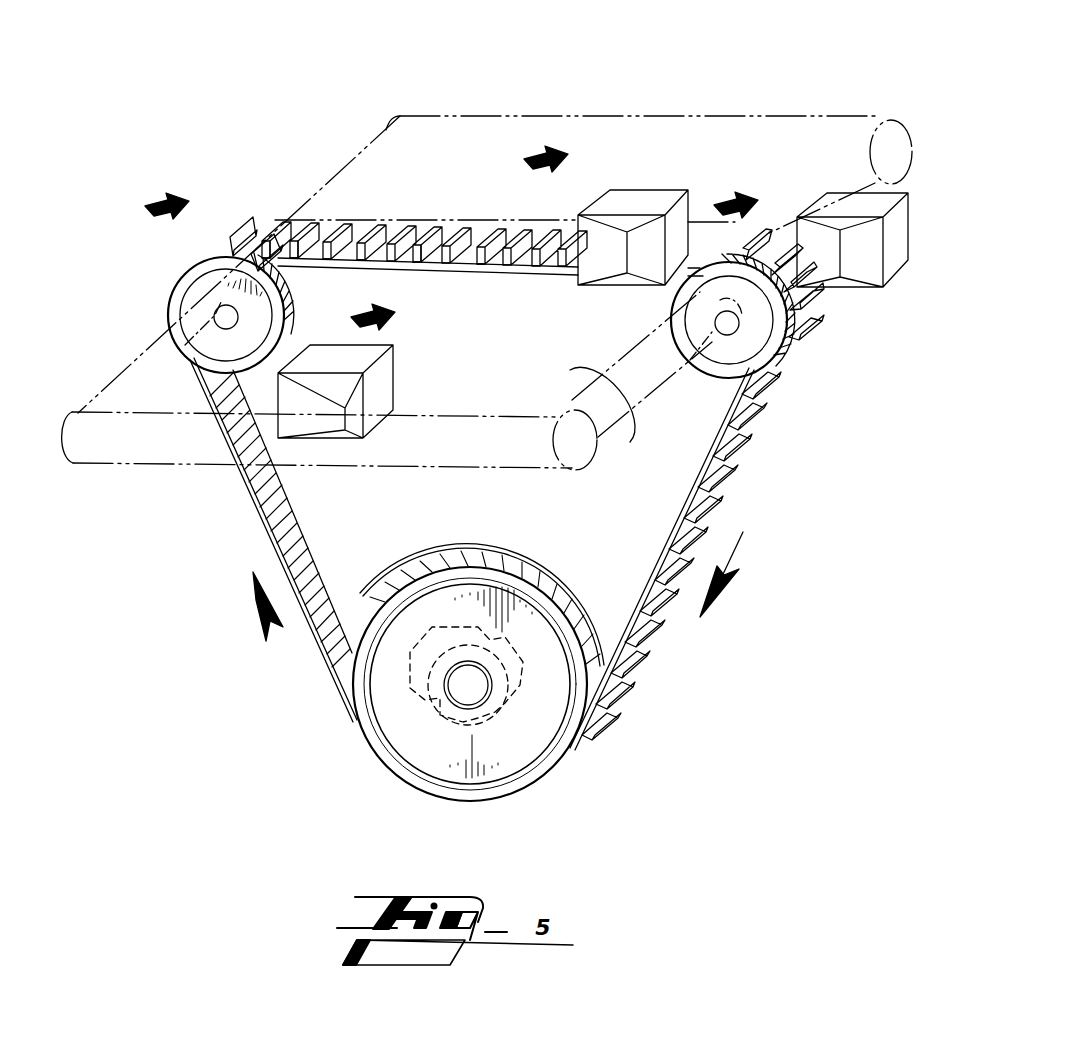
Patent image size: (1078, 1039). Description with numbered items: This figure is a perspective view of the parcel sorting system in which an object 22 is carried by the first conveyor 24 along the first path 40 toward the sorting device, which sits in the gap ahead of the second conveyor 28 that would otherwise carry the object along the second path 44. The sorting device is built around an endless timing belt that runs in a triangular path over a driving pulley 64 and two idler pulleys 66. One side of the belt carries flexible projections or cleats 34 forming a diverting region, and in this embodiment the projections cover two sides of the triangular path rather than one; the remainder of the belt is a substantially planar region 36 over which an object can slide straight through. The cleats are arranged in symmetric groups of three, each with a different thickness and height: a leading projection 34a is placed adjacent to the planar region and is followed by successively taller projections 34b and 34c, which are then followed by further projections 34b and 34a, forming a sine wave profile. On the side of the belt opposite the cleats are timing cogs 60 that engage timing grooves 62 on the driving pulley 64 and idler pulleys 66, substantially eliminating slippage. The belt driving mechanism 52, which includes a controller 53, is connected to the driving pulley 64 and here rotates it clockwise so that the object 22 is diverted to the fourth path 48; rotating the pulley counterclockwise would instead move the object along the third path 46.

The object 22 is at (640, 197).
The first conveyor 24 is at (626, 442).
The second conveyor 28 is at (740, 132).
The projections 34 is at (747, 443).
The leading projection 34a is at (240, 243).
The projection 34b is at (246, 236).
The projection 34c is at (263, 240).
The planar region 36 is at (257, 503).
The first path 40 is at (382, 333).
The second path 44 is at (540, 158).
The third path 46 is at (158, 197).
The fourth path 48 is at (733, 205).
The belt driving mechanism 52 is at (440, 730).
The controller 53 is at (445, 720).
The timing cogs 60 is at (293, 552).
The timing grooves 62 is at (477, 557).
The driving pulley 64 is at (533, 790).
The idler pulleys 66 is at (170, 300).